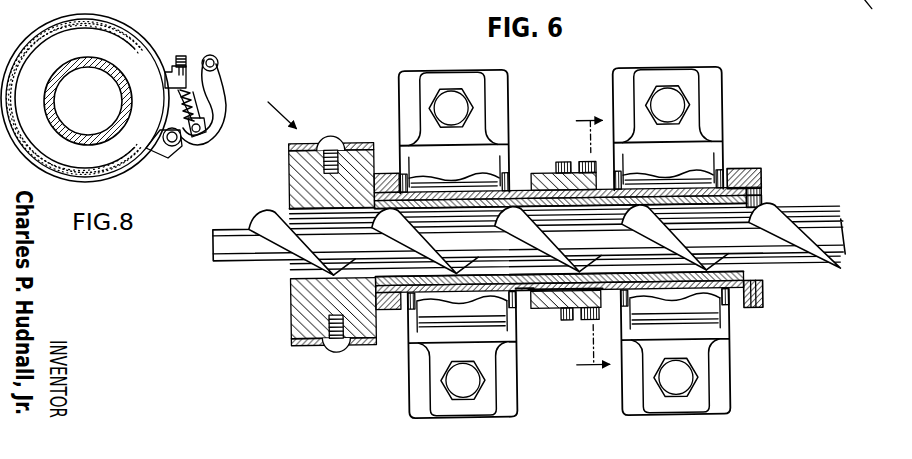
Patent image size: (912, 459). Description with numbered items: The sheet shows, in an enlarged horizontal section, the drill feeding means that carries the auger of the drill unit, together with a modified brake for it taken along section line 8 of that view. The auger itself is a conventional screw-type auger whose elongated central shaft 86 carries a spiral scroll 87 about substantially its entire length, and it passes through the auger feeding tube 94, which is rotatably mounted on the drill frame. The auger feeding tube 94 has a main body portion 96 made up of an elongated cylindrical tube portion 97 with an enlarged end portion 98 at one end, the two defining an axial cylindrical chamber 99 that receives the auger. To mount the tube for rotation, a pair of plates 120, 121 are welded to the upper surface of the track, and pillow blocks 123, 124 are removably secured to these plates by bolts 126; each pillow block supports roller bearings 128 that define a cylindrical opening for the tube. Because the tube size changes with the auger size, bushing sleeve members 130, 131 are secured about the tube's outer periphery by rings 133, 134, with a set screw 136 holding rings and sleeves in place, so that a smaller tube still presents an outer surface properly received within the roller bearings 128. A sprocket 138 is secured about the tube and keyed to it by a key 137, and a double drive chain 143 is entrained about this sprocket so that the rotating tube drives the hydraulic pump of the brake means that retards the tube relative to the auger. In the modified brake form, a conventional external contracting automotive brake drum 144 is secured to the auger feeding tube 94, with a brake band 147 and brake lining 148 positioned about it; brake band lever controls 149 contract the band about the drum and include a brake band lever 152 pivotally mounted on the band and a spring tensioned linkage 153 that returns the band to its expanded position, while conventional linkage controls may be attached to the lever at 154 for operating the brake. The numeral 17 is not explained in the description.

In FIG. 6, the section line 8— 8 is at (583, 243).
In FIG. 6, the housing 17 is at (879, 11).
In FIG. 6, the central shaft 86 is at (833, 237).
In FIG. 6, the spiral scroll 87 is at (762, 258).
In FIG. 8, the auger feeding tube 94 is at (108, 128).
In FIG. 6, the auger feeding tube 94 is at (332, 126).
In FIG. 6, the main body portion 96 is at (303, 304).
In FIG. 6, the cylindrical tube portion 97 is at (766, 201).
In FIG. 6, the enlarged end portion 98 is at (303, 168).
In FIG. 6, the cylindrical chamber 99 is at (300, 270).
In FIG. 6, the plate 120 is at (500, 83).
In FIG. 6, the plate 121 is at (712, 86).
In FIG. 6, the pillow block 123 is at (440, 76).
In FIG. 6, the pillow block 124 is at (655, 74).
In FIG. 6, the bolt 126 is at (463, 387).
In FIG. 6, the roller bearing 128 is at (470, 176).
In FIG. 6, the bushing sleeve member 130 is at (511, 190).
In FIG. 6, the bushing sleeve member 131 is at (763, 192).
In FIG. 6, the ring 133 is at (388, 171).
In FIG. 6, the ring 134 is at (740, 171).
In FIG. 6, the set screw 136 is at (752, 309).
In FIG. 6, the key 137 is at (526, 300).
In FIG. 6, the sprocket 138 is at (549, 174).
In FIG. 6, the double drive chain 143 is at (582, 322).
In FIG. 8, the brake drum 144 is at (93, 43).
In FIG. 8, the brake band 147 is at (108, 175).
In FIG. 8, the brake lining 148 is at (60, 172).
In FIG. 8, the brake band lever controls 149 is at (182, 56).
In FIG. 8, the brake band lever 152 is at (218, 80).
In FIG. 8, the spring tensioned linkage 153 is at (208, 116).
In FIG. 8, the linkage control connection 154 is at (216, 63).